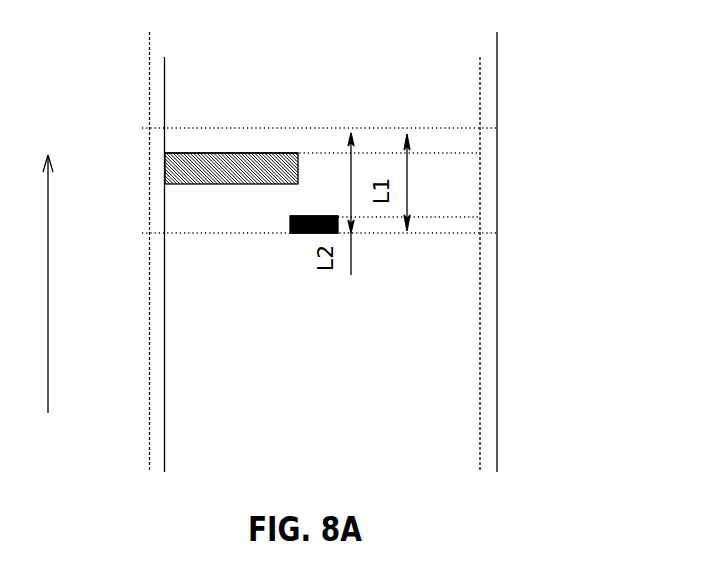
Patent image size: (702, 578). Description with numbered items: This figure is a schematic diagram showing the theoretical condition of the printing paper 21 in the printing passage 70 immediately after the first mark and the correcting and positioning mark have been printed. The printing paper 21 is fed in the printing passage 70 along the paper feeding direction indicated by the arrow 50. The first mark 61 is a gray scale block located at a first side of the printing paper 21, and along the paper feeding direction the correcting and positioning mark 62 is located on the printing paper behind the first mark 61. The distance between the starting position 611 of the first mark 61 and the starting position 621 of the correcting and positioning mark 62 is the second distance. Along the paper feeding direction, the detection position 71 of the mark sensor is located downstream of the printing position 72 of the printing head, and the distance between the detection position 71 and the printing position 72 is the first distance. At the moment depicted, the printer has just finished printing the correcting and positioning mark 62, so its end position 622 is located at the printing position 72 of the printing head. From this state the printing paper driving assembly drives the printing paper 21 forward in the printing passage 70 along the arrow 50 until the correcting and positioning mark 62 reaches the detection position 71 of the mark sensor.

The printing paper 21 is at (443, 393).
The arrow 50 is at (56, 284).
The first mark 61 is at (200, 183).
The starting position of the first mark 611 is at (225, 153).
The correcting and positioning mark 62 is at (317, 233).
The starting position of the correcting and positioning mark 621 is at (290, 216).
The end position of the correcting and positioning mark 622 is at (308, 236).
The printing passage 70 is at (487, 329).
The detection position of the mark sensor 71 is at (375, 128).
The printing position of the printing head 72 is at (432, 233).